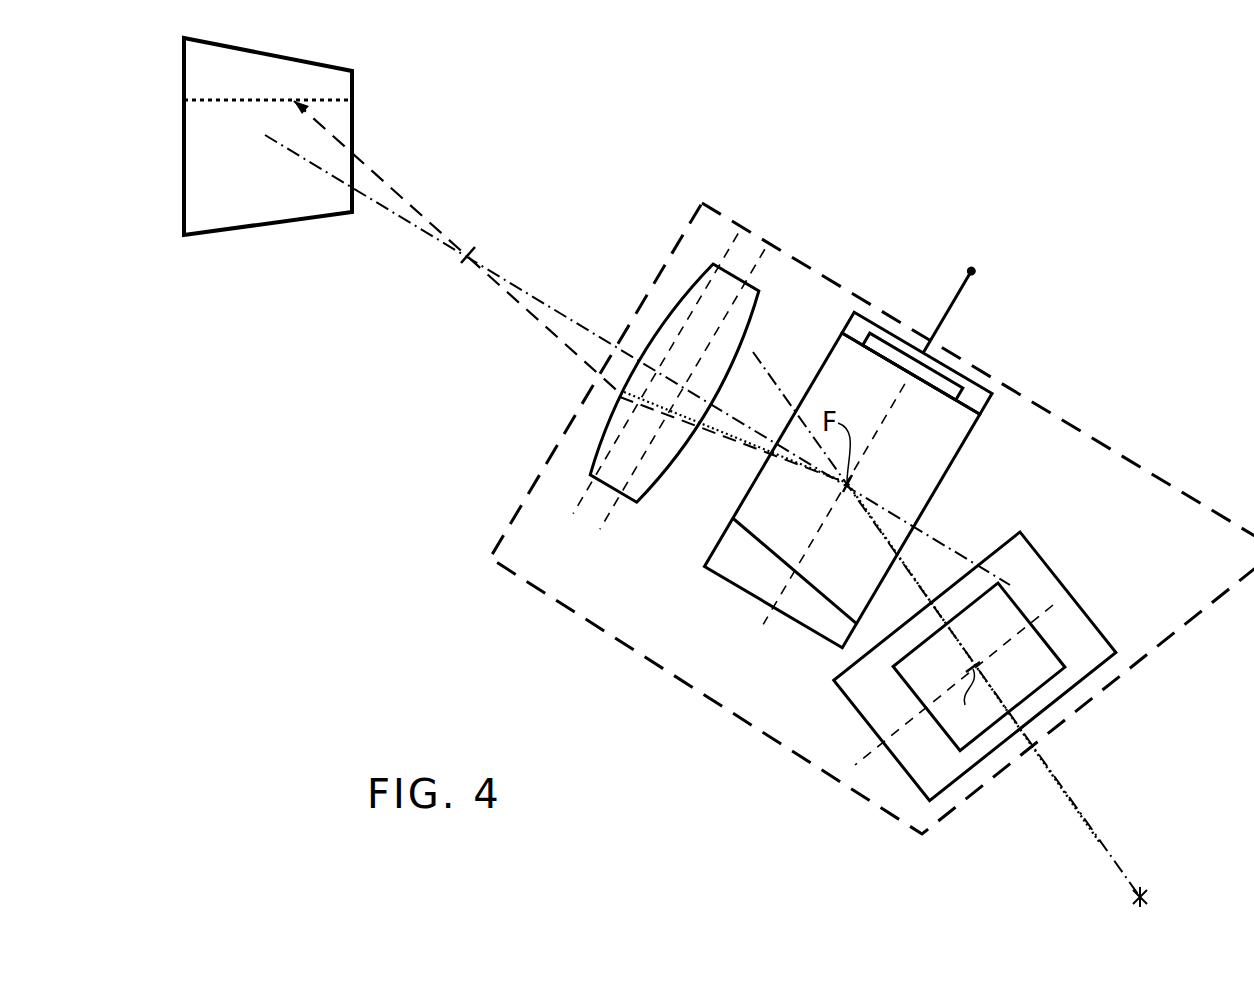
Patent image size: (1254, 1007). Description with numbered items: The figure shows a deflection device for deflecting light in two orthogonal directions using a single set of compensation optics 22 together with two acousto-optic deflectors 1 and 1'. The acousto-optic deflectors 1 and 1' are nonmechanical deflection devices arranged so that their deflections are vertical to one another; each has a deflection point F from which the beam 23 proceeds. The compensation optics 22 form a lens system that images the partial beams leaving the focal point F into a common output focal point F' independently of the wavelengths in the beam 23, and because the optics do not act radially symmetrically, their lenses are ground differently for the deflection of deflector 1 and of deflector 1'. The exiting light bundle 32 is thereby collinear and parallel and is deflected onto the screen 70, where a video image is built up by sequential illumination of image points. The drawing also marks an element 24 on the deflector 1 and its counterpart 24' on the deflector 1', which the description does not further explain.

The screen 70 is at (352, 78).
The light bundle 32 is at (519, 303).
The compensation optics 22 is at (758, 290).
The acousto-optic deflector 1 is at (864, 499).
The plate / detector 24 is at (942, 321).
The beam 23 is at (1058, 792).
The image of plate 24' is at (975, 650).
The acousto-optic deflector 1' is at (998, 674).